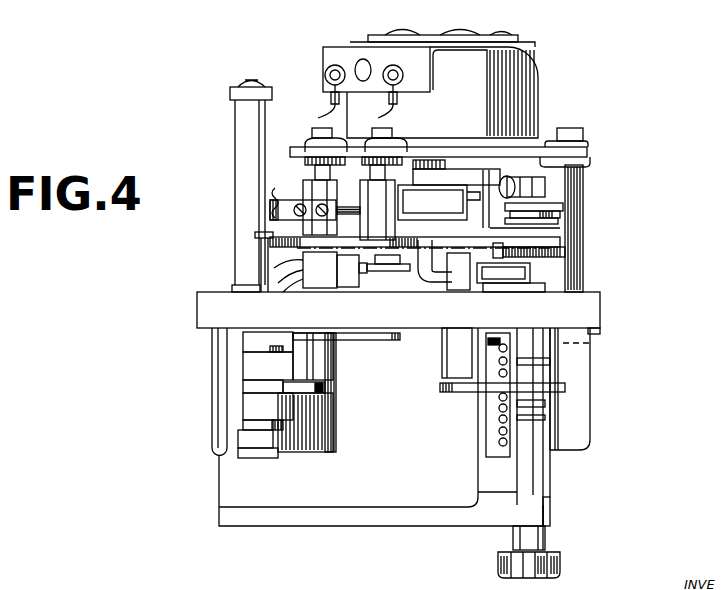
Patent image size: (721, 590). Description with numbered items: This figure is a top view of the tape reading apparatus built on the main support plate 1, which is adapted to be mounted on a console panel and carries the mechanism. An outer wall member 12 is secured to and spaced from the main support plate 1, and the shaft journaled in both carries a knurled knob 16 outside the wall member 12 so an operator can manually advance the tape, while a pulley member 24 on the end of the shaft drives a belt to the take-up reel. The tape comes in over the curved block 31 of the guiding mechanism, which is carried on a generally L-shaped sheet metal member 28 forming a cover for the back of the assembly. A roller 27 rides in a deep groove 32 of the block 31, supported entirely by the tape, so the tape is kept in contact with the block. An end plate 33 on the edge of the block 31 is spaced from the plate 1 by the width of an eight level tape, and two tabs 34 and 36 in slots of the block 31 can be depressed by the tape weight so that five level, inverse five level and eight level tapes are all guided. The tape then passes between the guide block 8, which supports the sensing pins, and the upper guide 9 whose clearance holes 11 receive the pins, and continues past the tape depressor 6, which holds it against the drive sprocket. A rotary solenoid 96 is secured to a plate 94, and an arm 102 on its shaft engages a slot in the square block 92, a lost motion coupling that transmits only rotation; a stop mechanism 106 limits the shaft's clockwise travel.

The main support plate 1 is at (587, 308).
The tape depressor 6 is at (560, 388).
The guide block 8 is at (500, 473).
The upper guide 9 is at (490, 443).
The clearance holes 11 is at (500, 419).
The outer wall member 12 is at (548, 510).
The knurled knob 16 is at (560, 553).
The pulley member 24 is at (546, 206).
The roller 27 is at (330, 386).
The L-shaped sheet metal member 28 is at (310, 497).
The curved block 31 is at (335, 424).
The groove 32 is at (256, 390).
The end plate 33 is at (255, 458).
The tab 34 is at (247, 424).
The tab 36 is at (252, 348).
The square block 92 is at (441, 215).
The plate 94 is at (500, 157).
The rotary solenoid 96 is at (527, 82).
The arm 102 is at (485, 168).
The stop mechanism 106 is at (566, 182).